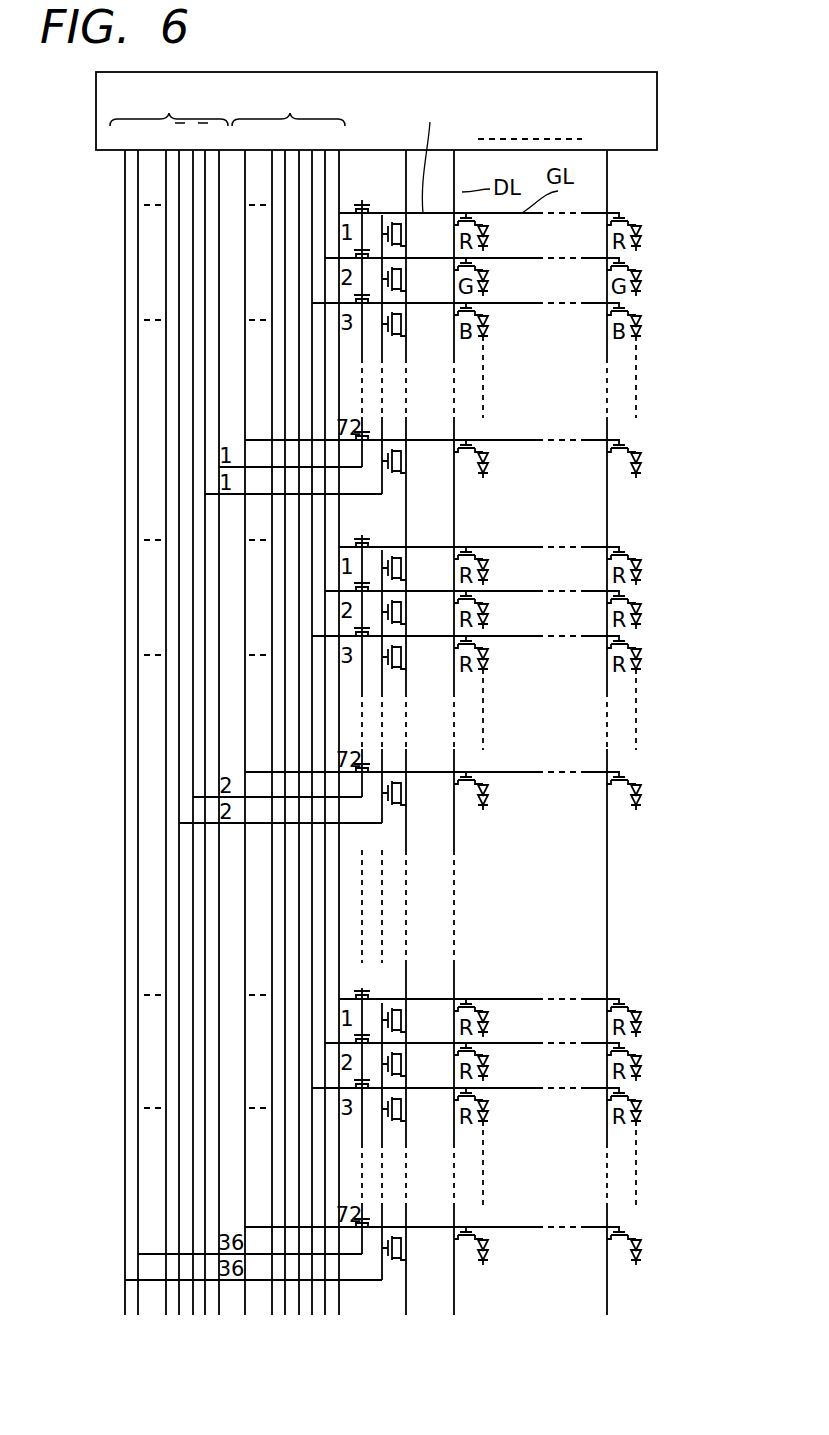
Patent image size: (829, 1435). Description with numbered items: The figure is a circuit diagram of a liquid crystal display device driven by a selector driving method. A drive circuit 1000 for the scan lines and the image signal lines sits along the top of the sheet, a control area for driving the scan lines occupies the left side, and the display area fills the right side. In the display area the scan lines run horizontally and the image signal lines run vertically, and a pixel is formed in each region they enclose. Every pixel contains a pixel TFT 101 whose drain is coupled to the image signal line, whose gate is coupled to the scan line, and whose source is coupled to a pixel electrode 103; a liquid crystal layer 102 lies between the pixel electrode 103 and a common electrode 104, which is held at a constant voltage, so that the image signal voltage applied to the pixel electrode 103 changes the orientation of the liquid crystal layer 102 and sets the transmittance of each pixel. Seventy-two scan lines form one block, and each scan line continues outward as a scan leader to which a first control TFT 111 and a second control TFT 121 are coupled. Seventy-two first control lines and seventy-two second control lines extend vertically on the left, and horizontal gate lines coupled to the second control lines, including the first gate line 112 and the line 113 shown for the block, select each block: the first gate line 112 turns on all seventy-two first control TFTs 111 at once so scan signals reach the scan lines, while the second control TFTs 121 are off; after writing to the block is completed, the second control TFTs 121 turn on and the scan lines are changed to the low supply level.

The drive circuit 1000 is at (657, 112).
The first control TFT 111 is at (360, 200).
The second control TFT 121 is at (384, 222).
The first gate line 112 is at (355, 468).
The second block control line 113 is at (367, 495).
The pixel TFT 101 is at (623, 215).
The liquid crystal layer 102 is at (643, 238).
The pixel electrode 103 is at (642, 263).
The common electrode 104 is at (642, 293).